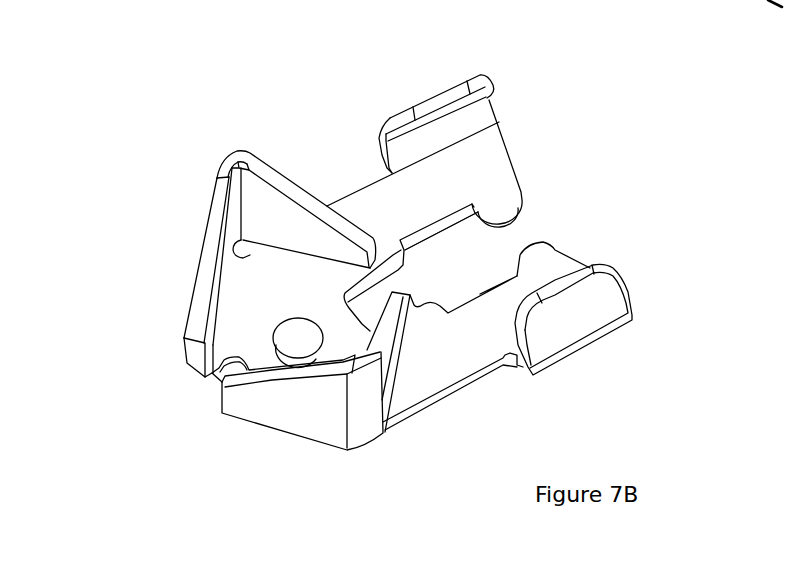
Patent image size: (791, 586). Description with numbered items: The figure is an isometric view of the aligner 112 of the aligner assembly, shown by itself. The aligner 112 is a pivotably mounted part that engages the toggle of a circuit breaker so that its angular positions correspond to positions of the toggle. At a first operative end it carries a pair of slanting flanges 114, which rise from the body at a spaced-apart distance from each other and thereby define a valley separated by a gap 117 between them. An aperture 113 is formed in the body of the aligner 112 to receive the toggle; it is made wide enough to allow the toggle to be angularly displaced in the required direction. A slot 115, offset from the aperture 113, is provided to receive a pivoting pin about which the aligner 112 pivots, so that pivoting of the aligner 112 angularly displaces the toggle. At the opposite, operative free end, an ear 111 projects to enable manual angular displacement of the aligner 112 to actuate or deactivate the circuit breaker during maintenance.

The ear 111 is at (602, 317).
The aligner 112 is at (325, 98).
The aperture 113 is at (482, 252).
The slanting flanges 114 is at (217, 179).
The slot 115 is at (297, 336).
The gap 117 is at (215, 386).